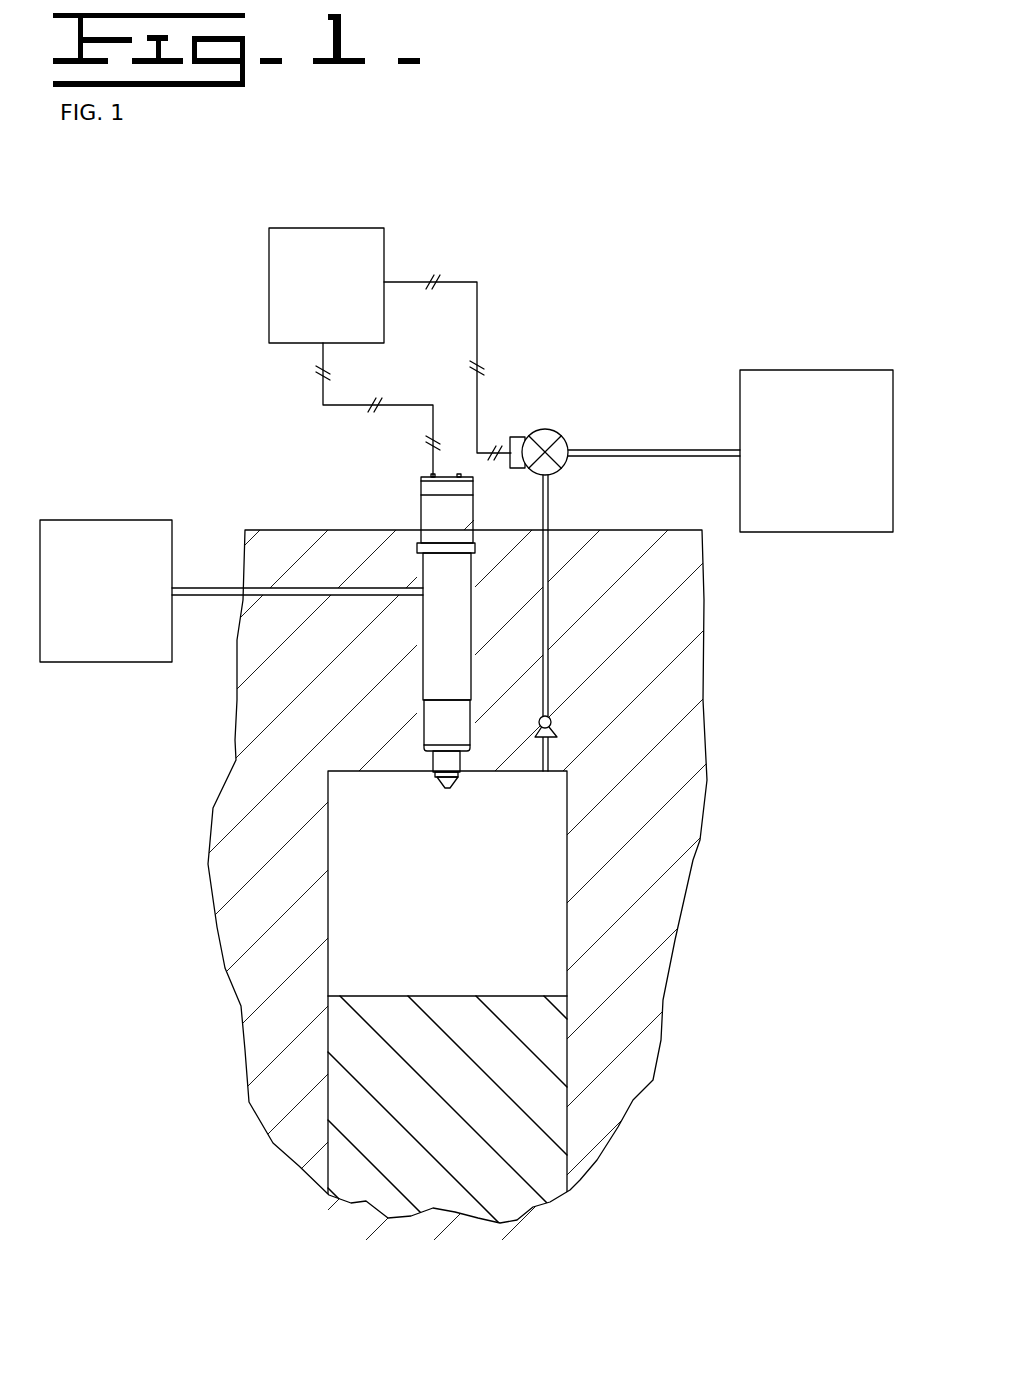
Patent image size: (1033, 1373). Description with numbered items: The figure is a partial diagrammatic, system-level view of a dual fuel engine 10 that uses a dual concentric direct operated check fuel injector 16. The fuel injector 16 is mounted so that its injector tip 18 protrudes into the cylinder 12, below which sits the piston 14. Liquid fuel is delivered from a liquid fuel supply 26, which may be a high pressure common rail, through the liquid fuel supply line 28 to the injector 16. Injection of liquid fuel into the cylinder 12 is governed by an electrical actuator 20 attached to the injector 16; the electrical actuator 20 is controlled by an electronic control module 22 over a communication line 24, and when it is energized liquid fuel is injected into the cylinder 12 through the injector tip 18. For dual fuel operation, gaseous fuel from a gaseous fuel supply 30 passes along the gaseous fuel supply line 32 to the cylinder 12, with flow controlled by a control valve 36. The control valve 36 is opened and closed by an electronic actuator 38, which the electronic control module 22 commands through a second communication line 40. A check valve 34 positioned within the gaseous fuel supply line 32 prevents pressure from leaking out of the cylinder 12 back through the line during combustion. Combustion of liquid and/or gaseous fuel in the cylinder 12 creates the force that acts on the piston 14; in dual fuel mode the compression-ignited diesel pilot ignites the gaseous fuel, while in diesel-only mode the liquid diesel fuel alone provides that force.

The dual fuel engine 10 is at (747, 1158).
The cylinder 12 is at (453, 922).
The piston 14 is at (518, 996).
The fuel injector 16 is at (422, 630).
The injector tip 18 is at (442, 782).
The electrical actuator 20 is at (460, 474).
The electronic control module 22 is at (282, 344).
The communication line 24 is at (402, 405).
The liquid fuel supply 26 is at (73, 520).
The liquid fuel supply line 28 is at (215, 588).
The gaseous fuel supply 30 is at (848, 532).
The gaseous fuel supply line 32 is at (663, 450).
The check valve 34 is at (555, 720).
The control valve 36 is at (567, 440).
The electronic actuator 38 is at (520, 437).
The communication line 40 is at (477, 303).